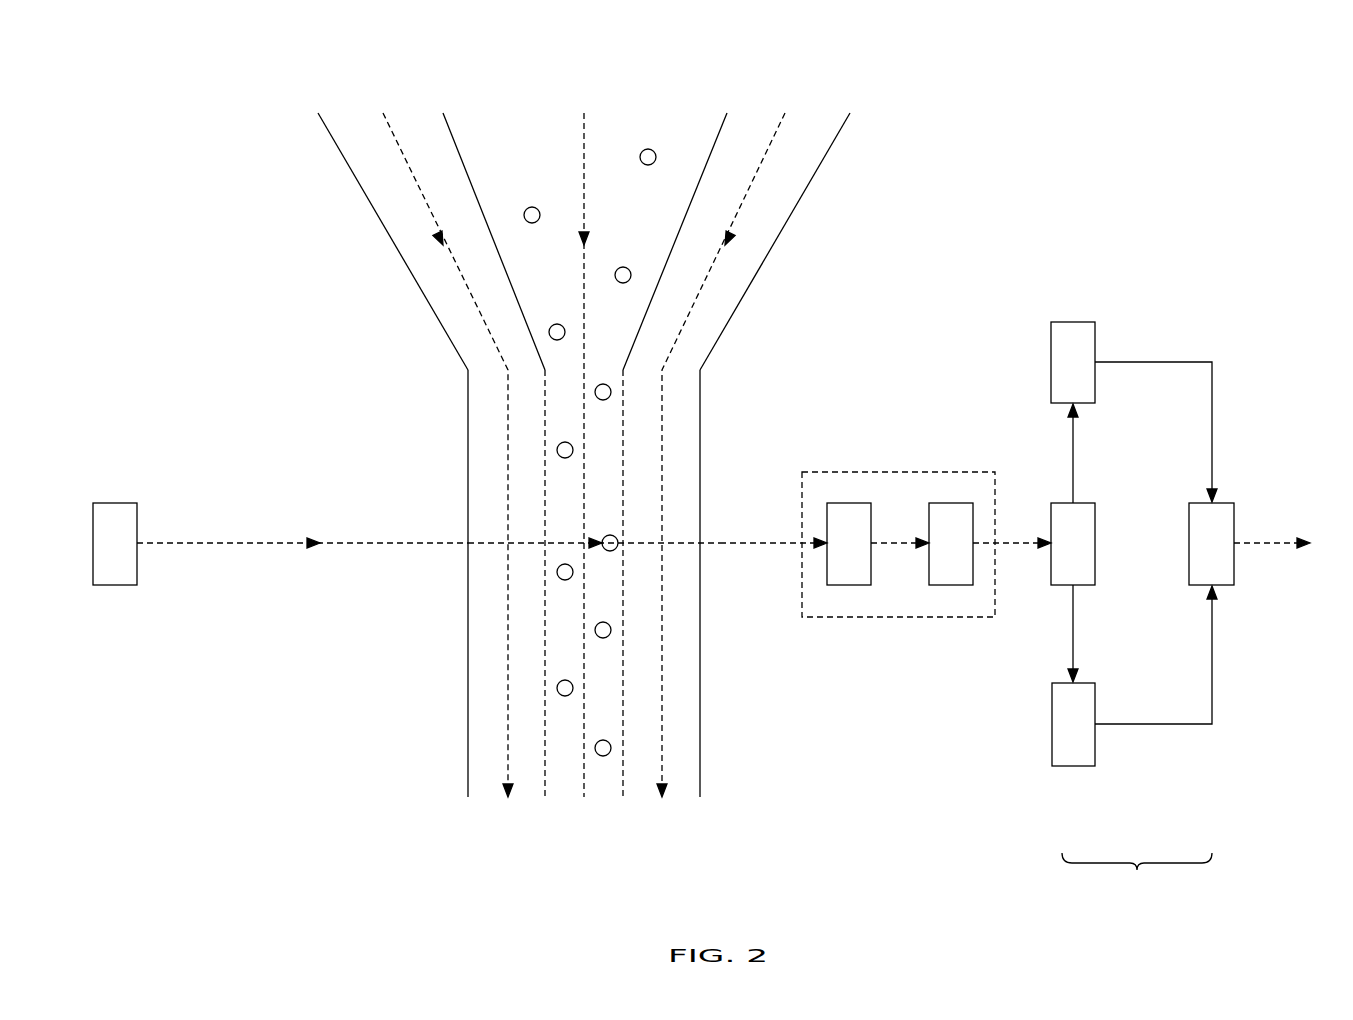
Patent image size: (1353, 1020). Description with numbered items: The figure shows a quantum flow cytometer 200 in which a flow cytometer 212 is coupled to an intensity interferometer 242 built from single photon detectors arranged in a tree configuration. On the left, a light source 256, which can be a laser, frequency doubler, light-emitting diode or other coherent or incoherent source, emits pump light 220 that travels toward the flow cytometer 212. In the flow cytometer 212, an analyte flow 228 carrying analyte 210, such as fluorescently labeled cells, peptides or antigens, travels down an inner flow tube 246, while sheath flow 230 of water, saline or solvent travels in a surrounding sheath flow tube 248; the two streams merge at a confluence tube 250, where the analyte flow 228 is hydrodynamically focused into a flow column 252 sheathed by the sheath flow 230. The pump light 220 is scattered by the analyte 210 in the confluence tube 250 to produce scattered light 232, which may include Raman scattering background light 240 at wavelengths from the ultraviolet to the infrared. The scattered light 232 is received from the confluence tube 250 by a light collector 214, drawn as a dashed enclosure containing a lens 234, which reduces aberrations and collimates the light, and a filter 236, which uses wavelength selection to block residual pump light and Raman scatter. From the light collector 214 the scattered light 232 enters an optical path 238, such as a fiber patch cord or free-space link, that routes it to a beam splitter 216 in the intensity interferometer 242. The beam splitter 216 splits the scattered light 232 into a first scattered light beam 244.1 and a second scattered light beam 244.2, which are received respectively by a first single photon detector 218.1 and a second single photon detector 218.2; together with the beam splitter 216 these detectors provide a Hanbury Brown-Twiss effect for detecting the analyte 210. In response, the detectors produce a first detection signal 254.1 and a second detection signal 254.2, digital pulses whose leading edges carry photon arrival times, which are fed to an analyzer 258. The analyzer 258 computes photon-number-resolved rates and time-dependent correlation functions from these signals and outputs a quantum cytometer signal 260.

The quantum flow cytometer 200 is at (125, 59).
The analyte 210 is at (656, 157).
The flow cytometer 212 is at (584, 455).
The light collector 214 is at (893, 533).
The beam splitter 216 is at (1082, 570).
The first single photon detector 218.1 is at (1074, 332).
The second single photon detector 218.2 is at (1075, 766).
The pump light 220 is at (222, 545).
The analyte flow 228 is at (597, 125).
The sheath flow 230 is at (390, 129).
The scattered light 232 is at (752, 547).
The lens 234 is at (848, 585).
The filter 236 is at (952, 585).
The optical path 238 is at (1091, 543).
The Raman scattering background light 240 is at (730, 537).
The intensity interferometer 242 is at (1129, 586).
The first scattered light beam 244.1 is at (1076, 470).
The second scattered light beam 244.2 is at (1076, 650).
The inner flow tube 246 is at (450, 130).
The sheath flow tube 248 is at (384, 230).
The confluence tube 250 is at (468, 500).
The flow column 252 is at (545, 438).
The first detection signal 254.1 is at (1212, 403).
The second detection signal 254.2 is at (1212, 690).
The light source 256 is at (115, 585).
The analyzer 258 is at (1225, 515).
The quantum cytometer signal 260 is at (1273, 547).